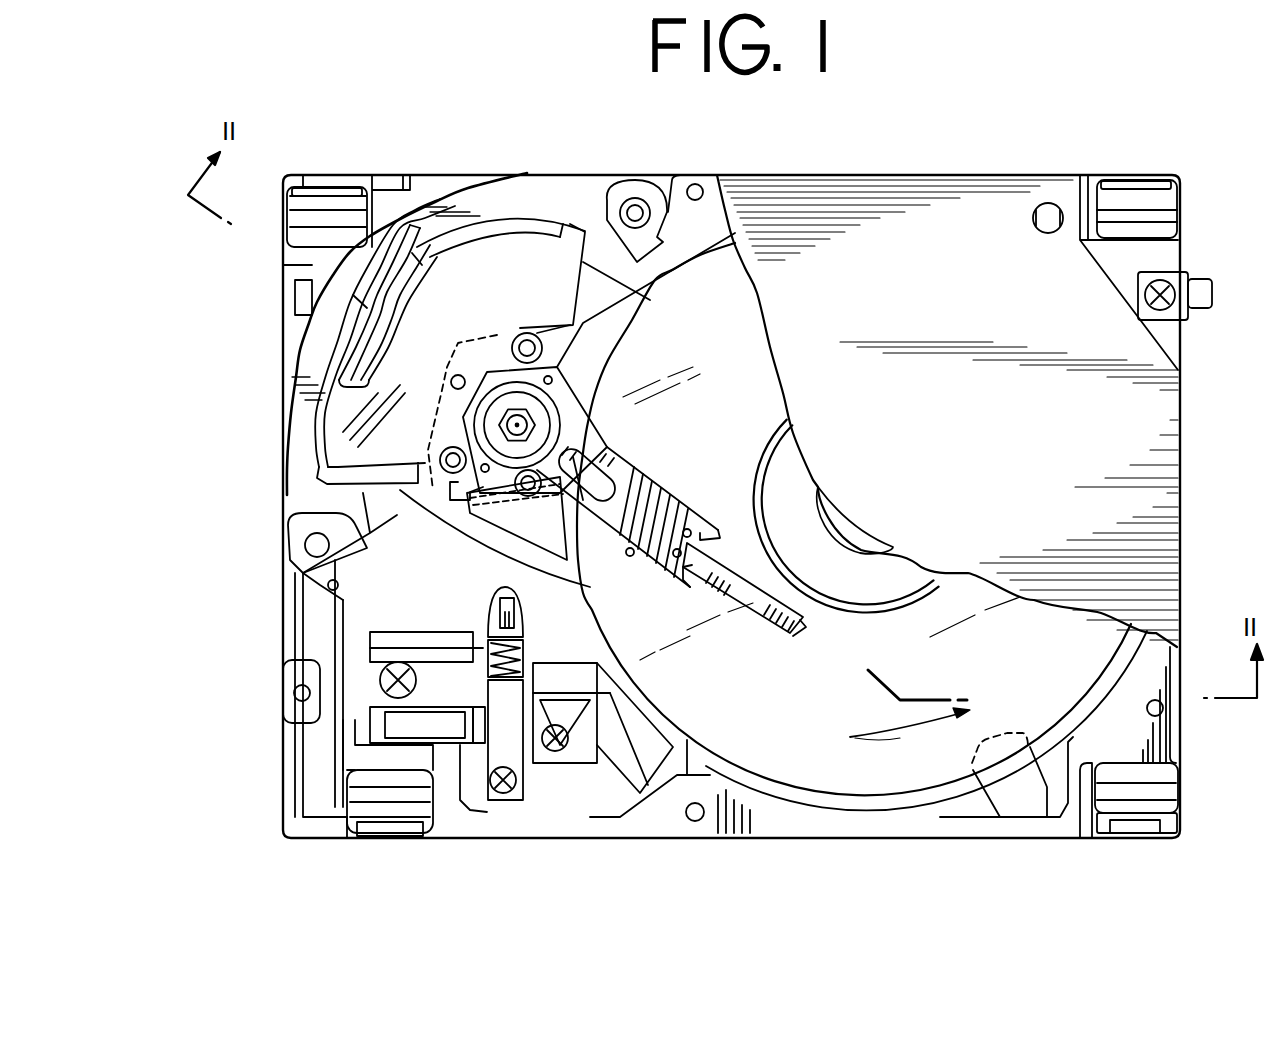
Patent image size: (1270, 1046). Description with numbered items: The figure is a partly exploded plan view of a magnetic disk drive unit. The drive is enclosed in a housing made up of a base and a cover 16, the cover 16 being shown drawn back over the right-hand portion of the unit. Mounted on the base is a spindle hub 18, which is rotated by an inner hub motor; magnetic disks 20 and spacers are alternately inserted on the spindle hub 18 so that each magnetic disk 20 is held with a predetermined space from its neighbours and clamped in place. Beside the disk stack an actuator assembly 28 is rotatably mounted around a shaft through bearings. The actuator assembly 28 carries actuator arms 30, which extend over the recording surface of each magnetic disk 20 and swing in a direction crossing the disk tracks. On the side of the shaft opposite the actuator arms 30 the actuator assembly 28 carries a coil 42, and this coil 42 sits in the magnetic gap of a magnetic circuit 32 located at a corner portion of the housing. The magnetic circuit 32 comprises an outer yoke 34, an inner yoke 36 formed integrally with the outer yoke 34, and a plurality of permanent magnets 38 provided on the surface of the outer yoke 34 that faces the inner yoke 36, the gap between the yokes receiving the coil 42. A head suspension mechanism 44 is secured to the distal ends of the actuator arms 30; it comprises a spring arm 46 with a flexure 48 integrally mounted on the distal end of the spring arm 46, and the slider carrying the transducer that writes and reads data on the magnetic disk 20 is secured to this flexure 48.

The cover 16 is at (940, 215).
The spindle hub 18 is at (850, 620).
The magnetic disk 20 is at (848, 793).
The actuator assembly 28 is at (513, 205).
The actuator arm 30 is at (600, 452).
The magnetic circuit 32 is at (392, 172).
The outer yoke 34 is at (297, 422).
The inner yoke 36 is at (367, 356).
The permanent magnet 38 is at (462, 232).
The coil 42 is at (367, 270).
The head suspension mechanism 44 is at (731, 524).
The spring arm 46 is at (710, 573).
The flexure 48 is at (787, 625).